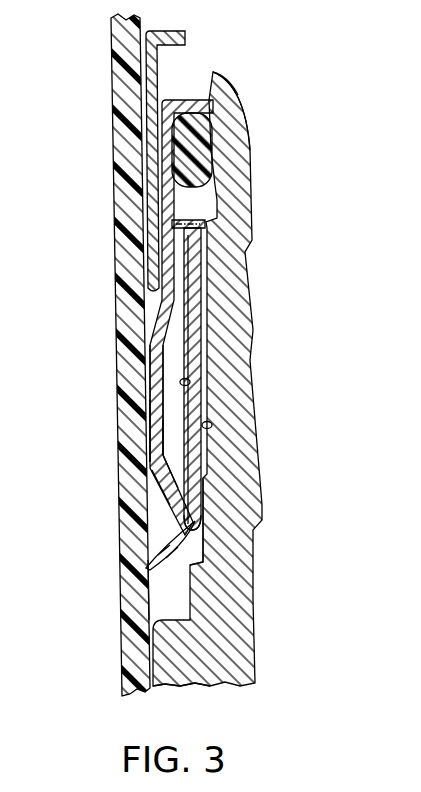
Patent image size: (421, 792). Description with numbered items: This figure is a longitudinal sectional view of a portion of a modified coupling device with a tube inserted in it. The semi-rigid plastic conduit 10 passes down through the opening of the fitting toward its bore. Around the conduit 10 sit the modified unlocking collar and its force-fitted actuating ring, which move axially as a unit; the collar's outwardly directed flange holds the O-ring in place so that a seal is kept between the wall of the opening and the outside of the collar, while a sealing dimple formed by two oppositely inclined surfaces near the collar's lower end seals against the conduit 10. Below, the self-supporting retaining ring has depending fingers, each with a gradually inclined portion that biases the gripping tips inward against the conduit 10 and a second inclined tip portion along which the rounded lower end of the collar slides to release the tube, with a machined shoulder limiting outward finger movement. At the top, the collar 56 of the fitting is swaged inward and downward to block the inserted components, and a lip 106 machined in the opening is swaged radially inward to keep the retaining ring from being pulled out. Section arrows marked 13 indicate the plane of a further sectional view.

The conduit 10 is at (112, 68).
The section line 13 is at (178, 312).
The collar 56 is at (236, 95).
The lip 106 is at (199, 222).